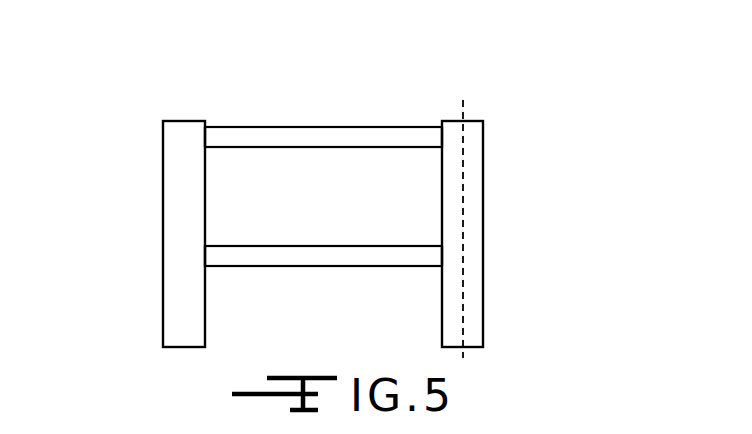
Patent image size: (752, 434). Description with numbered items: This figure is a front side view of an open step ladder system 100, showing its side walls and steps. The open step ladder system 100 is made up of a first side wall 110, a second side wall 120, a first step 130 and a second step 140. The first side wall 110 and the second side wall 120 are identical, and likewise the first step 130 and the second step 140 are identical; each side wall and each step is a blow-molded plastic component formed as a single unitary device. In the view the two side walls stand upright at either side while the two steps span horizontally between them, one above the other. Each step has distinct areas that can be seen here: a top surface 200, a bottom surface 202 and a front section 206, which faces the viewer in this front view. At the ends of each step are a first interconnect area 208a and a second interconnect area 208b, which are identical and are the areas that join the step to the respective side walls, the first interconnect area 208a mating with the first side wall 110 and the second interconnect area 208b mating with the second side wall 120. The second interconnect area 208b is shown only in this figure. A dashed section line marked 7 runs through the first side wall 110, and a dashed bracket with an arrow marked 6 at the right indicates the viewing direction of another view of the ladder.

The open step ladder system 100 is at (488, 85).
The first side wall 110 is at (483, 200).
The second side wall 120 is at (163, 216).
The first step 130 is at (320, 266).
The second step 140 is at (318, 126).
The top surface 200 is at (258, 126).
The bottom surface 202 is at (330, 147).
The front section 206 is at (258, 147).
The first interconnect area 208a is at (453, 120).
The second interconnect area 208b is at (177, 121).
The view direction indicator 6 is at (622, 122).
The section line 7 is at (463, 104).